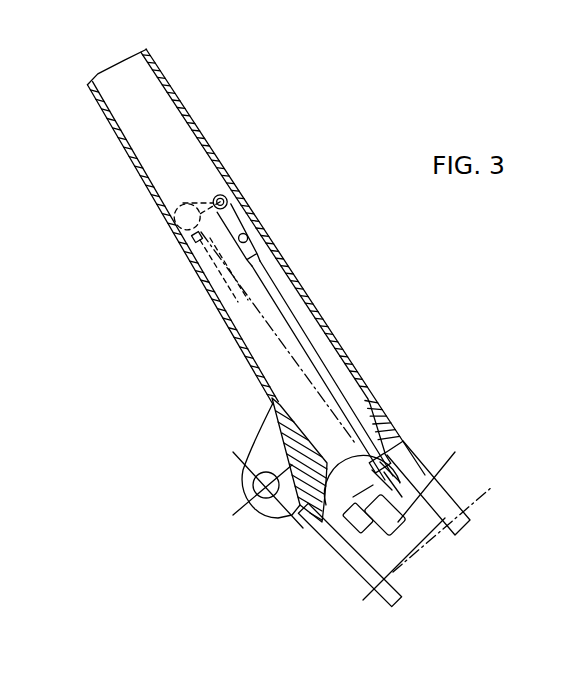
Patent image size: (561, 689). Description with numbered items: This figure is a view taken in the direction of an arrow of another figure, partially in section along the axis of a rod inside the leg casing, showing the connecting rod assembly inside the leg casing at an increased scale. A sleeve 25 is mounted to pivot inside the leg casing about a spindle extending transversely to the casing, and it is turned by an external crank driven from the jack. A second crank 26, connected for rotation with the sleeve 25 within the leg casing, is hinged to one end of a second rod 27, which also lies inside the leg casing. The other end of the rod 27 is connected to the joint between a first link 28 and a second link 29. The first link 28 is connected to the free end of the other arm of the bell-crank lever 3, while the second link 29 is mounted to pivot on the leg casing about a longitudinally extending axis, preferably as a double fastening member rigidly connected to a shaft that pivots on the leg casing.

The bell-crank lever 3 is at (412, 543).
The sleeve 25 is at (228, 198).
The second crank 26 is at (236, 221).
The second rod 27 is at (303, 336).
The first link 28 is at (420, 510).
The second link 29 is at (353, 500).